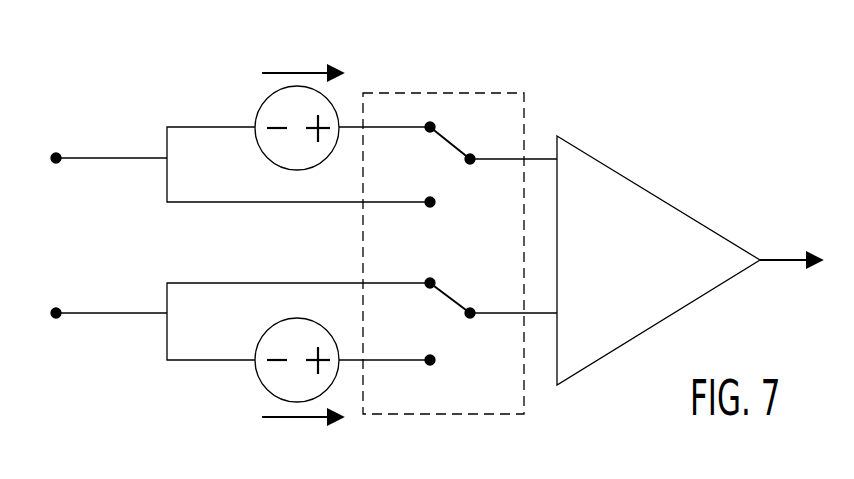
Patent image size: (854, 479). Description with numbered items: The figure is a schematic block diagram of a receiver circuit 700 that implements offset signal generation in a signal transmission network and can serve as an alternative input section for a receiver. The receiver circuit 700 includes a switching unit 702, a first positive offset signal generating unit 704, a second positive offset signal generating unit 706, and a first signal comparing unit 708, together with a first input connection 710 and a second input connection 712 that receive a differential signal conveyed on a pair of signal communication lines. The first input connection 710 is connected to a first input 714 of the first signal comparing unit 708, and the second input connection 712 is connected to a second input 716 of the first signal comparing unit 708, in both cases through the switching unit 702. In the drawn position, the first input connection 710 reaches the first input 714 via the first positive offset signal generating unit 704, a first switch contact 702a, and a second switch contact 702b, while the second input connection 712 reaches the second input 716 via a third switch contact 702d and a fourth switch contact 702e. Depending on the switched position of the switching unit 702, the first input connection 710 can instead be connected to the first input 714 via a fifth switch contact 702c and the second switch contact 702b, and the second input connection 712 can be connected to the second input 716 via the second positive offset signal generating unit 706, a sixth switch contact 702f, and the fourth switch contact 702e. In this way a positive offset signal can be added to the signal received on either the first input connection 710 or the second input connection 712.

The receiver circuit 700 is at (421, 239).
The switching unit 702 is at (500, 100).
The first switch contact 702a is at (430, 124).
The second switch contact 702b is at (473, 156).
The fifth switch contact 702c is at (433, 204).
The third switch contact 702d is at (428, 280).
The fourth switch contact 702e is at (473, 310).
The sixth switch contact 702f is at (434, 363).
The first positive offset signal generating unit 704 is at (267, 98).
The second positive offset signal generating unit 706 is at (267, 390).
The first signal comparing unit 708 is at (684, 222).
The first input connection 710 is at (58, 154).
The second input connection 712 is at (58, 309).
The first input 714 is at (560, 162).
The second input 716 is at (557, 313).